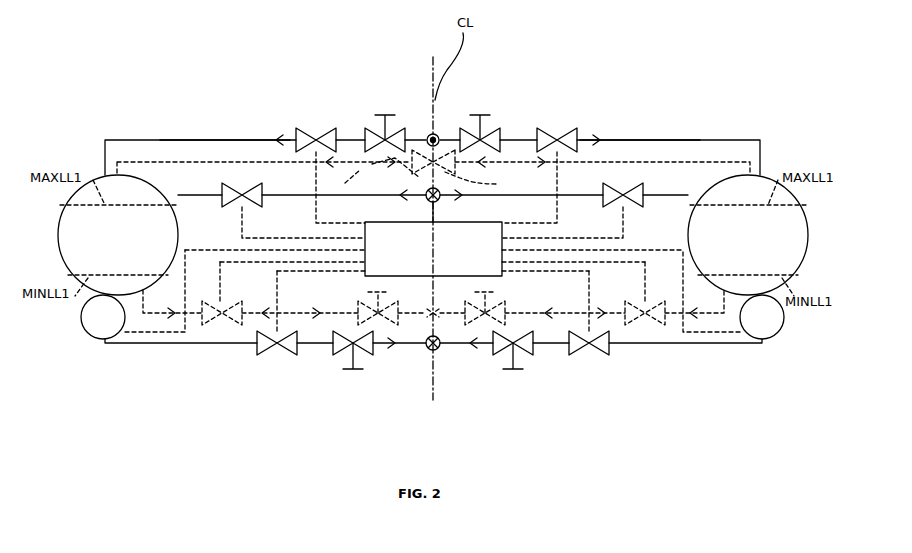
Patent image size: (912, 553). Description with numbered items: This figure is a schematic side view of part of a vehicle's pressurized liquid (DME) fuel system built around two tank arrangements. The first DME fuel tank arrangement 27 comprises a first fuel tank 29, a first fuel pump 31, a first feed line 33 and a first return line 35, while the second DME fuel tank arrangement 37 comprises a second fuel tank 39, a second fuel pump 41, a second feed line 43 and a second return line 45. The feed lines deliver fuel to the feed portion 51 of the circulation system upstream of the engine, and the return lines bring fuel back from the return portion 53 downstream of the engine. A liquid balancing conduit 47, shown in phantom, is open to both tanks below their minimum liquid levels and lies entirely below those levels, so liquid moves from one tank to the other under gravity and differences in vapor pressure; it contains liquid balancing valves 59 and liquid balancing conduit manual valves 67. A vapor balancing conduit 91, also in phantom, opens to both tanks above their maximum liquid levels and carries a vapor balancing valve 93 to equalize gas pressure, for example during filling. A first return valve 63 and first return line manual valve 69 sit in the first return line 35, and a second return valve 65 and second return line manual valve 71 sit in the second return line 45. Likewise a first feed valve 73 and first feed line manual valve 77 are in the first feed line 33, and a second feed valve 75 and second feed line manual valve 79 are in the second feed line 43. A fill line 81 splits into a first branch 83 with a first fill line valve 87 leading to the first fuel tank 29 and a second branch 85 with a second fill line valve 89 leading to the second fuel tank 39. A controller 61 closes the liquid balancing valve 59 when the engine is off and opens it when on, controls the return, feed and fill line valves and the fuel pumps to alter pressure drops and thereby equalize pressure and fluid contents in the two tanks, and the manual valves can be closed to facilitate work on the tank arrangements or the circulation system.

The first DME fuel tank arrangement 27 is at (238, 114).
The first fuel tank 29 is at (118, 235).
The first fuel pump 31 is at (95, 340).
The first feed line 33 is at (188, 348).
The first return line 35 is at (218, 138).
The second DME fuel tank arrangement 37 is at (623, 114).
The second fuel tank 39 is at (748, 235).
The second fuel pump 41 is at (777, 340).
The second feed line 43 is at (668, 352).
The second return line 45 is at (652, 138).
The liquid balancing conduit 47 is at (428, 310).
The feed portion 51 is at (437, 352).
The return portion 53 is at (428, 134).
The liquid balancing valve 59 is at (222, 306).
The controller 61 is at (433, 249).
The first return valve 63 is at (316, 128).
The second return valve 65 is at (553, 130).
The liquid balancing conduit manual valve 67 is at (362, 298).
The first return line manual valve 69 is at (375, 128).
The second return line manual valve 71 is at (485, 128).
The first feed valve 73 is at (257, 350).
The second feed valve 75 is at (607, 350).
The first feed line manual valve 77 is at (335, 356).
The second feed line manual valve 79 is at (532, 356).
The fill line 81 is at (424, 192).
The first branch 83 is at (208, 195).
The second branch 85 is at (668, 192).
The first fill line valve 87 is at (264, 192).
The second fill line valve 89 is at (610, 192).
The vapor balancing conduit 91 is at (374, 178).
The vapor balancing valve 93 is at (482, 181).